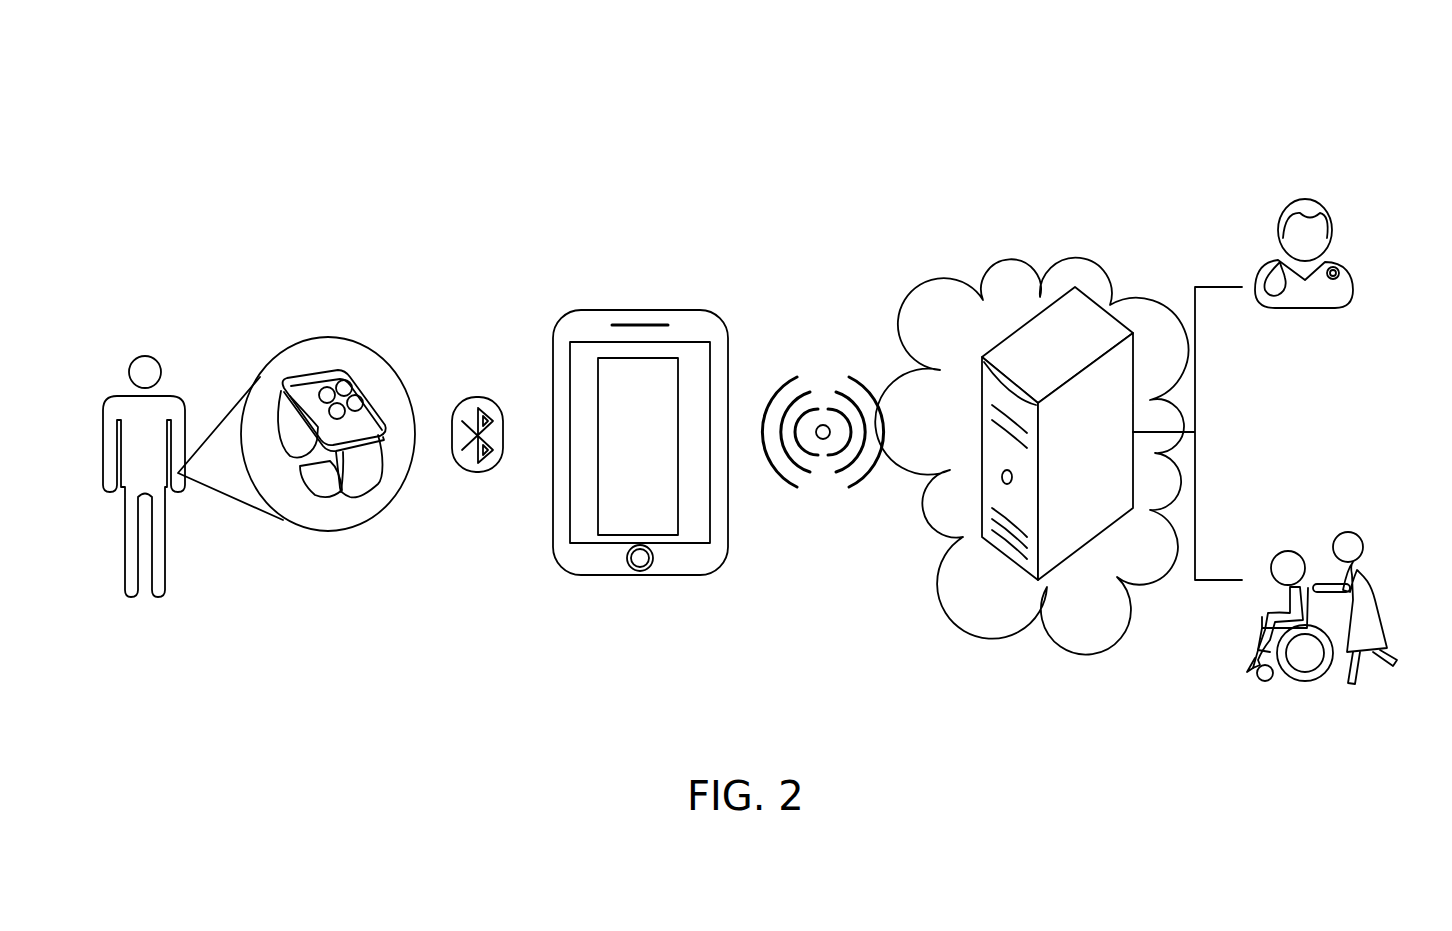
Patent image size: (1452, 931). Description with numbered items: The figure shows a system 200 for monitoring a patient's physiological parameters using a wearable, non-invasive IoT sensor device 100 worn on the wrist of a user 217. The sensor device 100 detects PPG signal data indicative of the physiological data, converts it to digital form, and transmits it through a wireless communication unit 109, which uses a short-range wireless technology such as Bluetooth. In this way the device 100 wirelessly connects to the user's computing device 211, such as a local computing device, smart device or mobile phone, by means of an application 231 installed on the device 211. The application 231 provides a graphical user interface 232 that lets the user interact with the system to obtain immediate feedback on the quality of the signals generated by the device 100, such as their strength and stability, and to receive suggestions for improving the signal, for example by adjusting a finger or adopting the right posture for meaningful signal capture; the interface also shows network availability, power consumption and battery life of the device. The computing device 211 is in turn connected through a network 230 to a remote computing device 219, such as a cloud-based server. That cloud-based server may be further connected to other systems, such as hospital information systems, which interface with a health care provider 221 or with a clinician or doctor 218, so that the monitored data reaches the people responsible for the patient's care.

The system 200 is at (1178, 105).
The user 217 is at (110, 400).
The sensor device 100 is at (337, 532).
The wireless communication unit 109 is at (480, 472).
The computing device 211 is at (630, 310).
The graphical user interface 232 is at (618, 390).
The application 231 is at (625, 543).
The network 230 is at (827, 472).
The remote computing device 219 is at (1033, 323).
The clinician/doctor 218 is at (1353, 287).
The health care provider 221 is at (1314, 695).